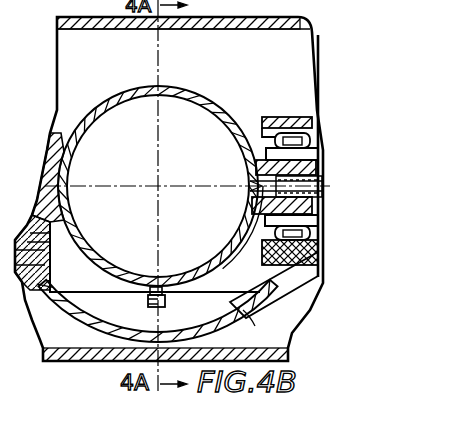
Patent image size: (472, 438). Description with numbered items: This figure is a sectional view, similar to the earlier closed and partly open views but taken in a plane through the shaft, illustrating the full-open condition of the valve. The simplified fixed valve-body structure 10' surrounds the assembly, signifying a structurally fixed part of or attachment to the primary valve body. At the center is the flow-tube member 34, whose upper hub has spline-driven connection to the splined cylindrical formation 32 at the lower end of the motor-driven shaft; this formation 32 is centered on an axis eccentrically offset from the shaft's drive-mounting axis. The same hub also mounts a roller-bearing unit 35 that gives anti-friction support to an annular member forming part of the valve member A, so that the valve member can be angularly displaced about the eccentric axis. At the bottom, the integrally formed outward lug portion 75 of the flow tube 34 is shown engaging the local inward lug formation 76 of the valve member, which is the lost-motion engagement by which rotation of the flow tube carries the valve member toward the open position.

The simplified valve-body part 10' is at (169, 189).
The flow-tube member 34 is at (126, 90).
The roller-bearing unit 35 is at (300, 117).
The splined cylindrical formation 32 is at (258, 190).
The outward lug portion 75 is at (165, 295).
The inward lug formation 76 is at (148, 303).